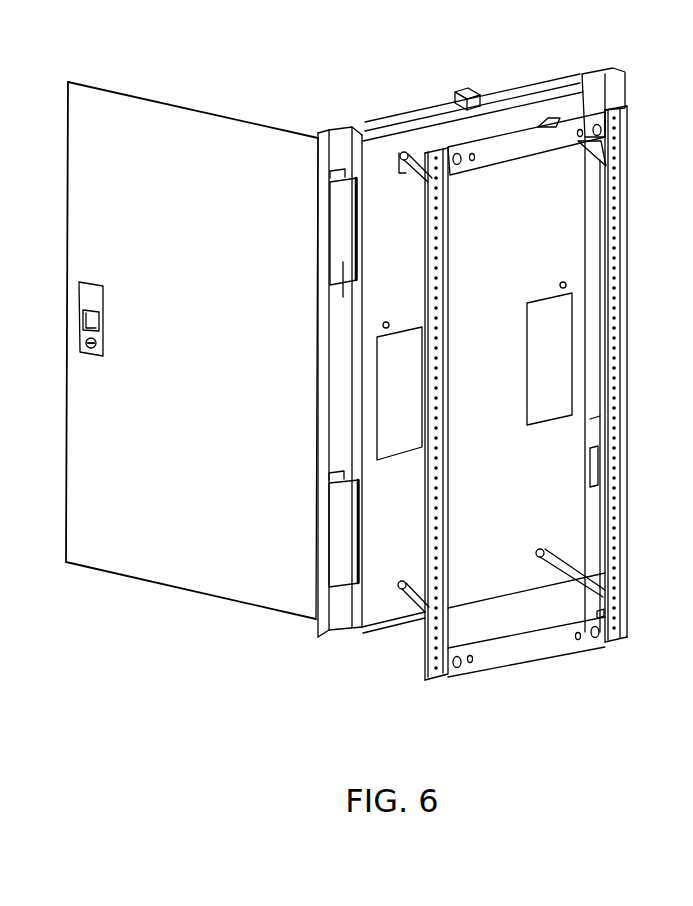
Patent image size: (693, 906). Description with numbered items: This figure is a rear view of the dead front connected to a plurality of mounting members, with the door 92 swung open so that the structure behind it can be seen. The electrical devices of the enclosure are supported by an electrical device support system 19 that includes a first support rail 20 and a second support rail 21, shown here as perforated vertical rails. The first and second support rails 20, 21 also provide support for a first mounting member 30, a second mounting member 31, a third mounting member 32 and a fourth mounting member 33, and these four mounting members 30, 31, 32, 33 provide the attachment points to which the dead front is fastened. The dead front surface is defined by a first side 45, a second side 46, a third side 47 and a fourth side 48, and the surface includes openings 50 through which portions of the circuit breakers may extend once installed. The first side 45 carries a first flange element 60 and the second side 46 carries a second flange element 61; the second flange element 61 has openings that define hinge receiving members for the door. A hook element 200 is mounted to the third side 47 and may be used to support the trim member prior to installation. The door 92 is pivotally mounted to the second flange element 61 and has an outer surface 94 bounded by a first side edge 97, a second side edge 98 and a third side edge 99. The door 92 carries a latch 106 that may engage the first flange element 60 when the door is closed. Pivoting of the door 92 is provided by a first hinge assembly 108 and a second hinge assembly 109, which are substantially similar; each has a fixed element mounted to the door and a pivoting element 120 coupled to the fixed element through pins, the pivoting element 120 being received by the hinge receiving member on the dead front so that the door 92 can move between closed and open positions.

The electrical device support system 19 is at (632, 546).
The first support rail 20 is at (618, 448).
The second support rail 21 is at (436, 624).
The first mounting member 30 is at (583, 162).
The second mounting member 31 is at (402, 177).
The third mounting member 32 is at (572, 555).
The fourth mounting member 33 is at (400, 600).
The first side 45 is at (598, 284).
The second side 46 is at (353, 326).
The third side 47 is at (423, 112).
The fourth side 48 is at (527, 596).
The openings 50 is at (533, 367).
The first flange element 60 is at (608, 92).
The second flange element 61 is at (343, 154).
The door 92 is at (160, 379).
The outer surface 94 is at (168, 430).
The first side edge 97 is at (152, 100).
The second side edge 98 is at (116, 578).
The third side edge 99 is at (66, 404).
The latch 106 is at (92, 268).
The first hinge assembly 108 is at (343, 236).
The second hinge assembly 109 is at (343, 540).
The pivoting element 120 is at (343, 266).
The hook element 200 is at (462, 88).